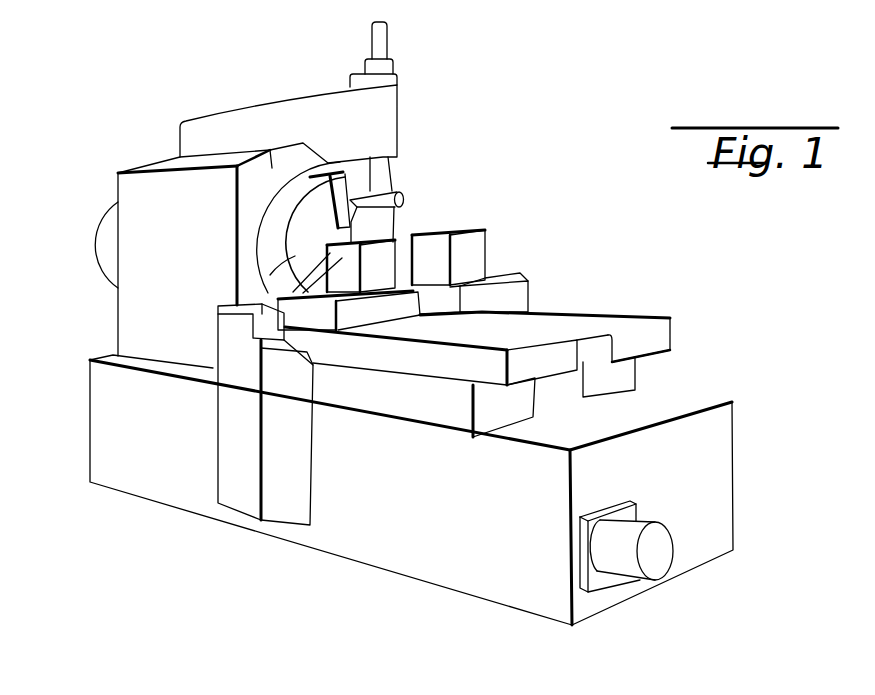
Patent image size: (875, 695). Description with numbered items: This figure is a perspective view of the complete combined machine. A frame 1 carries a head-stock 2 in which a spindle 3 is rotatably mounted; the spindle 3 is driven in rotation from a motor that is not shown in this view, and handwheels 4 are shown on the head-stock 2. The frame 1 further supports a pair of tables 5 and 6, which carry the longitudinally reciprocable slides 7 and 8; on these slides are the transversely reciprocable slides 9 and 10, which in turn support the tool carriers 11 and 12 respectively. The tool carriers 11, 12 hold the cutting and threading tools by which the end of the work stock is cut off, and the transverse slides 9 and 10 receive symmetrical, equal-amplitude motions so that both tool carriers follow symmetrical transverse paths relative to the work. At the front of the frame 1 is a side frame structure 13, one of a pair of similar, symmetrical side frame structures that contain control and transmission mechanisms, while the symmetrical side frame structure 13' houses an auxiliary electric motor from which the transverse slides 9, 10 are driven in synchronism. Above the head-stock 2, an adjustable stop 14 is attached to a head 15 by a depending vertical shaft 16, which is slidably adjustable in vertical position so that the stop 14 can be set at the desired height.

The frame 1 is at (396, 550).
The head-stock 2 is at (195, 253).
The spindle 3 is at (363, 230).
The handwheel 4 is at (98, 252).
The table 5 is at (483, 407).
The table 6 is at (630, 371).
The longitudinally reciprocable slide 7 is at (405, 362).
The longitudinally reciprocable slide 8 is at (582, 313).
The transversely reciprocable slide 9 is at (367, 313).
The transversely reciprocable slide 10 is at (510, 293).
The tool carrier 11 is at (393, 258).
The tool carrier 12 is at (466, 248).
The side frame structure 13 is at (236, 430).
The side frame structure 13' is at (626, 571).
The adjustable stop 14 is at (392, 198).
The head 15 is at (250, 113).
The vertical shaft 16 is at (388, 40).